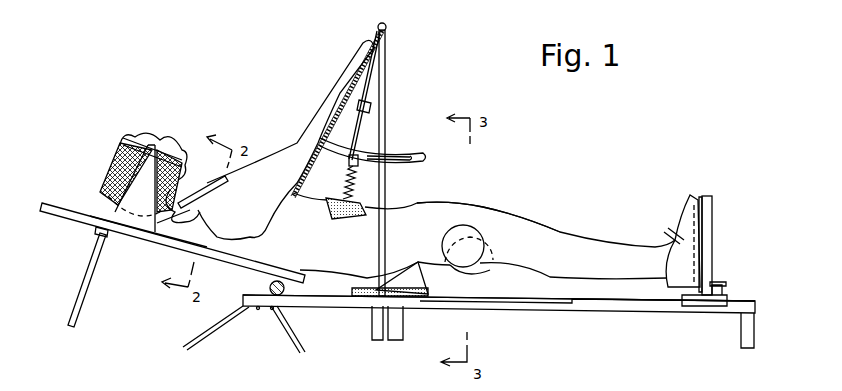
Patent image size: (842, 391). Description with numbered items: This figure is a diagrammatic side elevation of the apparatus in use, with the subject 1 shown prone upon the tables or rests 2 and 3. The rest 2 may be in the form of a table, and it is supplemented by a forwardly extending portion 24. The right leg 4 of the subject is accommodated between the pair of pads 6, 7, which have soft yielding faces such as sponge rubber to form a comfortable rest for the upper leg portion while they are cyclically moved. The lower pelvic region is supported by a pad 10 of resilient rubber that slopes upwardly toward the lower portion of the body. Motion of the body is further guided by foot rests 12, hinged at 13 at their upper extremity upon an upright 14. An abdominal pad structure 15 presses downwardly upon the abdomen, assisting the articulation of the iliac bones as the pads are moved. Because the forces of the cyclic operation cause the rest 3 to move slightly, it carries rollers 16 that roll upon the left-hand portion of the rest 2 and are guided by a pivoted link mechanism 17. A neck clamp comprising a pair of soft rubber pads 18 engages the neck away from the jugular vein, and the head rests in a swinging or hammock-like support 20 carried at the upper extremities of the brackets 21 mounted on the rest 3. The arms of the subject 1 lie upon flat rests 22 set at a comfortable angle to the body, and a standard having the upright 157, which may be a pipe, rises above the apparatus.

The subject 1 is at (312, 244).
The rest 2 is at (557, 313).
The rest 3 is at (136, 237).
The right leg 4 is at (465, 206).
The pad 6 is at (452, 230).
The pad 7 is at (493, 270).
The pad 10 is at (425, 283).
The foot rests 12 is at (678, 217).
The hinge 13 is at (700, 199).
The upright 14 is at (712, 226).
The abdominal pad structure 15 is at (346, 216).
The rollers 16 is at (290, 290).
The pivoted link mechanism 17 is at (80, 292).
The soft rubber pads 18 is at (190, 208).
The swinging or hammock-like support 20 is at (103, 178).
The brackets 21 is at (120, 218).
The flat rests 22 is at (330, 132).
The forwardly extending portion 24 is at (328, 306).
The upright 157 is at (388, 80).